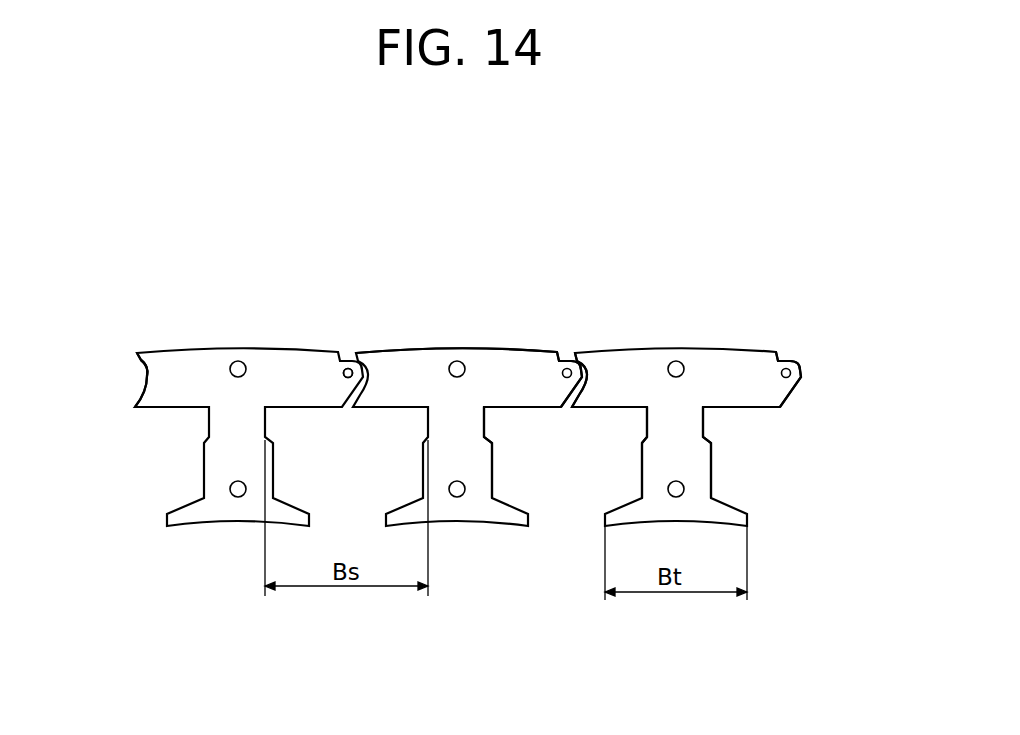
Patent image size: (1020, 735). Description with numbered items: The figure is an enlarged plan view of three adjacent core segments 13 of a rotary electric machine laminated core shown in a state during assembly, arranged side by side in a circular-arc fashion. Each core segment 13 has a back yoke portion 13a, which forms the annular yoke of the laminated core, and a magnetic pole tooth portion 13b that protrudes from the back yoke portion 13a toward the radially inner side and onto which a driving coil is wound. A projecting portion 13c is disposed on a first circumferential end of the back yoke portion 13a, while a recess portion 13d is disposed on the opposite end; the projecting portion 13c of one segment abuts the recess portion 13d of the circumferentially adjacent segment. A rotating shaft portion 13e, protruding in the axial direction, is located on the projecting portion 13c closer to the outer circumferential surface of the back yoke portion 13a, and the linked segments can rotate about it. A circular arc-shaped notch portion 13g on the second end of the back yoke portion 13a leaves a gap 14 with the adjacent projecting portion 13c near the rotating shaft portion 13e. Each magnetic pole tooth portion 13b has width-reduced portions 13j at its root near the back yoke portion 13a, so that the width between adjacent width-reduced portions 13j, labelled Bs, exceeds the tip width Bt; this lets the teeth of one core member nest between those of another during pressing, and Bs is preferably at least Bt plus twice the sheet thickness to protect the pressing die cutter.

The core segment 13 is at (417, 348).
The back yoke portion 13a is at (492, 365).
The magnetic pole tooth portion 13b is at (702, 460).
The projecting portion 13c is at (802, 378).
The recess portion 13d is at (120, 390).
The rotating shaft portion 13e is at (338, 355).
The circular arc-shaped notch portion 13g is at (140, 366).
The width-reduced portion 13j is at (644, 421).
The gap 14 is at (588, 355).